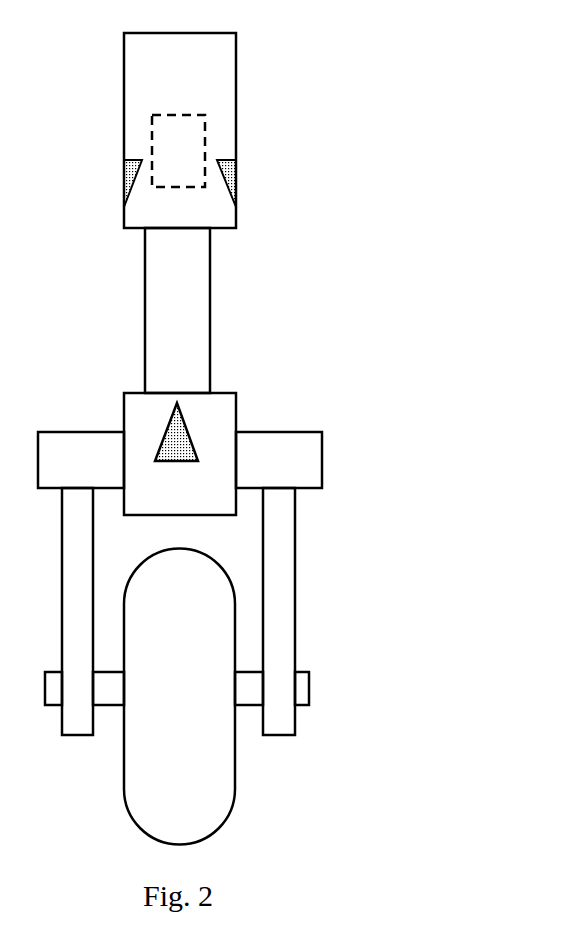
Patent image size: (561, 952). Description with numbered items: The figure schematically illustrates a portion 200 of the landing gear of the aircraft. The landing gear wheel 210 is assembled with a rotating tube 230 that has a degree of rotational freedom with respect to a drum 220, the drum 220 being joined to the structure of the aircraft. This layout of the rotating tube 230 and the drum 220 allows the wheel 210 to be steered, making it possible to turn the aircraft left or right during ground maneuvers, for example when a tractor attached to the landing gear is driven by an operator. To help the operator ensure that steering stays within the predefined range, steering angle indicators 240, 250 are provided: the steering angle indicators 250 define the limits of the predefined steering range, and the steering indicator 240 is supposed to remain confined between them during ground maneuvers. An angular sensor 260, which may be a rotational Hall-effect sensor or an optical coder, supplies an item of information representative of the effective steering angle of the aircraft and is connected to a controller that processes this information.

The portion of a landing gear 200 is at (421, 233).
The landing gear wheel 210 is at (316, 643).
The drum 220 is at (217, 83).
The rotating tube 230 is at (202, 368).
The steering indicator 240 is at (165, 437).
The steering angle indicators 250 is at (124, 178).
The angular sensor 260 is at (155, 128).